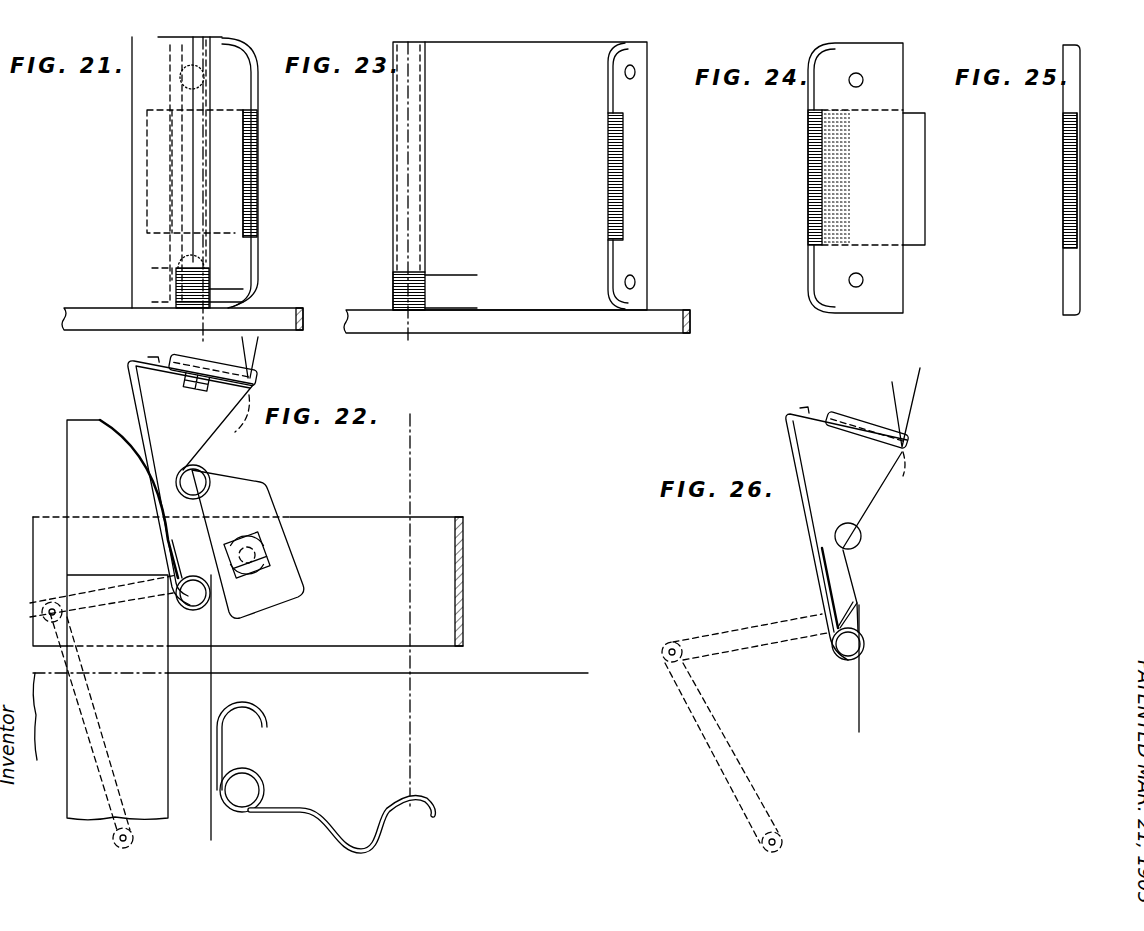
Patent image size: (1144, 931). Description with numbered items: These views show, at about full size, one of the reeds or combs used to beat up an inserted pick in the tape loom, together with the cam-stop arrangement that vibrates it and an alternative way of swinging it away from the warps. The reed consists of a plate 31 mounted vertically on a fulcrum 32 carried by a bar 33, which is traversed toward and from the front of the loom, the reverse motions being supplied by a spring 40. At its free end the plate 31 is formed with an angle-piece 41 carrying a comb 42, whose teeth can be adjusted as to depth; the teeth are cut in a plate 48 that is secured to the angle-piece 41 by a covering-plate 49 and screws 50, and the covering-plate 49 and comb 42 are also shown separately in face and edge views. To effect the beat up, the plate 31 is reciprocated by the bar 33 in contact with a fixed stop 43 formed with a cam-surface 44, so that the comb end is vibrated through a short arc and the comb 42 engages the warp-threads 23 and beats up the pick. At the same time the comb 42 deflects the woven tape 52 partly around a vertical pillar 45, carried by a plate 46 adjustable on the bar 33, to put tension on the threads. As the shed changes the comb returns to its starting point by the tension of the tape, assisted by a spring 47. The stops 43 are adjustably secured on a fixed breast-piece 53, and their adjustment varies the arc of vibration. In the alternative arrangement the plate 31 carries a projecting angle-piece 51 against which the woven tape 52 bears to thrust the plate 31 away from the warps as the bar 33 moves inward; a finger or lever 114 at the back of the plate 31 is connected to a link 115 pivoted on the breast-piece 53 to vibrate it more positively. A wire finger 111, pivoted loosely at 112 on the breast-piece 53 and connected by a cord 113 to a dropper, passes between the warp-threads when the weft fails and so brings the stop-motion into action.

In FIG. 22, the warp-threads 23 is at (256, 372).
In FIG. 21, the plate 31 is at (153, 189).
In FIG. 23, the plate 31 is at (520, 176).
In FIG. 22, the plate 31 is at (152, 428).
In FIG. 26, the plate 31 is at (798, 515).
In FIG. 21, the fulcrum 32 is at (170, 262).
In FIG. 23, the fulcrum 32 is at (412, 115).
In FIG. 22, the fulcrum 32 is at (183, 597).
In FIG. 26, the fulcrum 32 is at (842, 651).
In FIG. 21, the bar 33 is at (286, 323).
In FIG. 23, the bar 33 is at (661, 316).
In FIG. 22, the bar 33 is at (310, 638).
In FIG. 24, the spring 40 is at (912, 215).
In FIG. 22, the angle-piece 41 is at (165, 372).
In FIG. 26, the angle-piece 41 is at (857, 435).
In FIG. 21, the comb 42 is at (258, 200).
In FIG. 23, the comb 42 is at (605, 210).
In FIG. 24, the comb 42 is at (803, 221).
In FIG. 25, the comb 42 is at (1065, 223).
In FIG. 22, the comb 42 is at (235, 423).
In FIG. 26, the comb 42 is at (909, 474).
In FIG. 22, the fixed stop 43 is at (117, 620).
In FIG. 22, the cam-surface 44 is at (131, 478).
In FIG. 22, the vertical pillar 45 is at (210, 480).
In FIG. 26, the vertical pillar 45 is at (861, 537).
In FIG. 22, the plate 46 is at (255, 503).
In FIG. 21, the spring 47 is at (243, 289).
In FIG. 23, the spring 47 is at (425, 289).
In FIG. 22, the spring 47 is at (175, 556).
In FIG. 21, the plate 48 is at (147, 160).
In FIG. 25, the plate 48 is at (1078, 192).
In FIG. 22, the plate 48 is at (157, 355).
In FIG. 26, the plate 48 is at (806, 409).
In FIG. 21, the covering-plate 49 is at (258, 98).
In FIG. 23, the covering-plate 49 is at (640, 173).
In FIG. 24, the covering-plate 49 is at (855, 178).
In FIG. 25, the covering-plate 49 is at (1076, 97).
In FIG. 22, the covering-plate 49 is at (203, 343).
In FIG. 26, the covering-plate 49 is at (853, 418).
In FIG. 21, the screws 50 is at (180, 79).
In FIG. 22, the screws 50 is at (200, 401).
In FIG. 26, the projecting angle-piece 51 is at (850, 617).
In FIG. 22, the woven tape 52 is at (206, 769).
In FIG. 26, the woven tape 52 is at (860, 702).
In FIG. 22, the breast-piece 53 is at (365, 701).
In FIG. 22, the wire finger 111 is at (321, 798).
In FIG. 22, the pivot 112 is at (243, 800).
In FIG. 22, the cord 113 is at (405, 625).
In FIG. 22, the finger or lever 114 is at (100, 596).
In FIG. 26, the finger or lever 114 is at (772, 630).
In FIG. 22, the link 115 is at (100, 742).
In FIG. 26, the link 115 is at (730, 747).